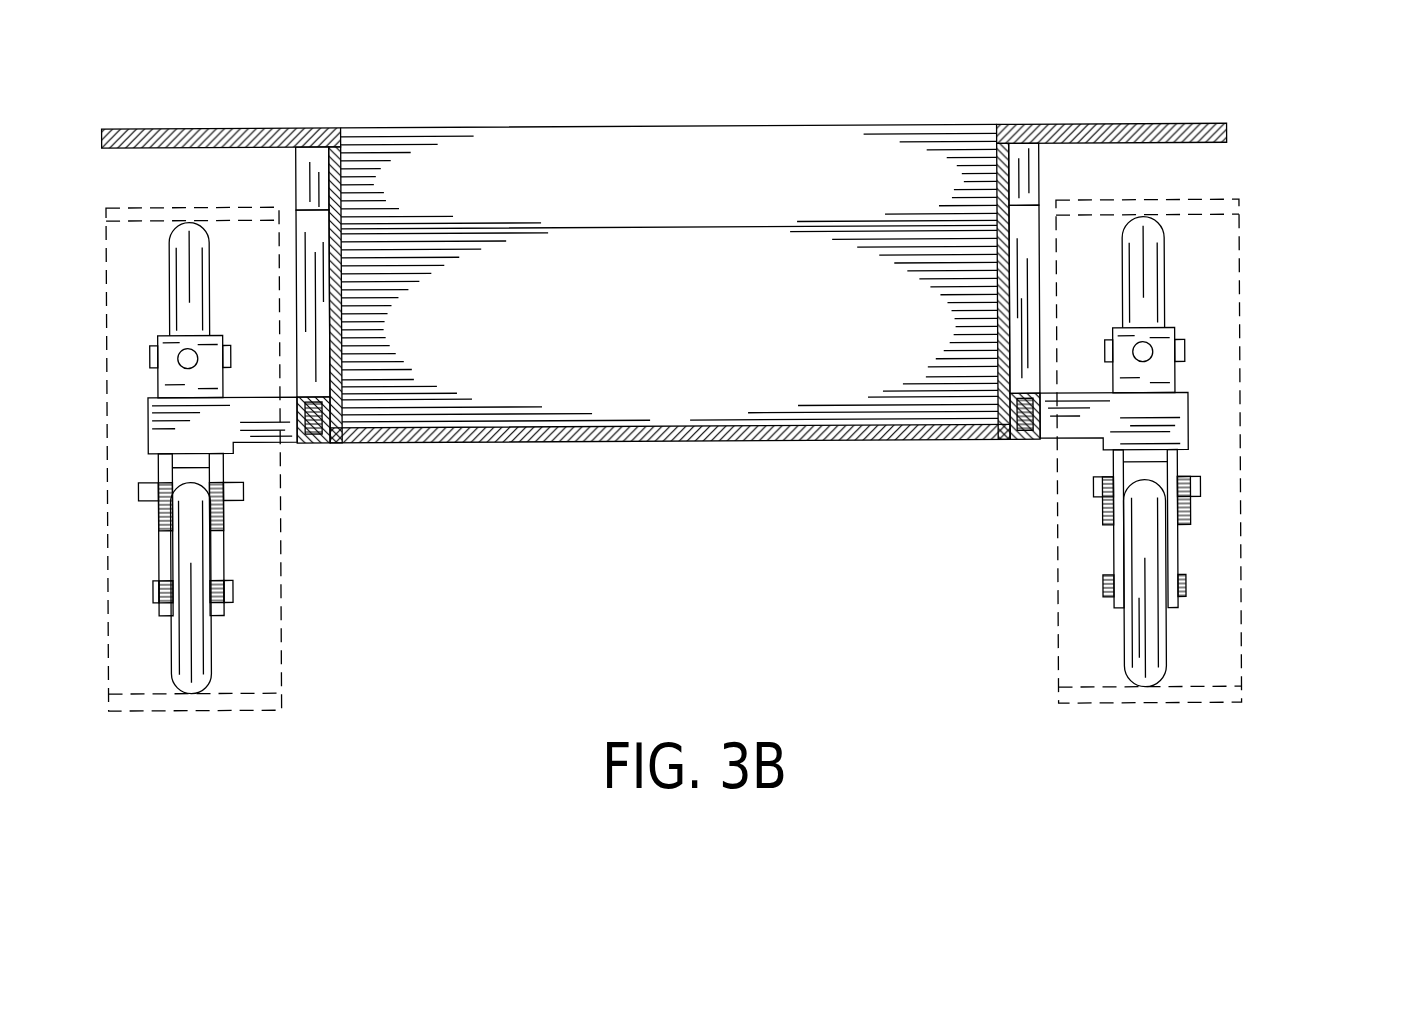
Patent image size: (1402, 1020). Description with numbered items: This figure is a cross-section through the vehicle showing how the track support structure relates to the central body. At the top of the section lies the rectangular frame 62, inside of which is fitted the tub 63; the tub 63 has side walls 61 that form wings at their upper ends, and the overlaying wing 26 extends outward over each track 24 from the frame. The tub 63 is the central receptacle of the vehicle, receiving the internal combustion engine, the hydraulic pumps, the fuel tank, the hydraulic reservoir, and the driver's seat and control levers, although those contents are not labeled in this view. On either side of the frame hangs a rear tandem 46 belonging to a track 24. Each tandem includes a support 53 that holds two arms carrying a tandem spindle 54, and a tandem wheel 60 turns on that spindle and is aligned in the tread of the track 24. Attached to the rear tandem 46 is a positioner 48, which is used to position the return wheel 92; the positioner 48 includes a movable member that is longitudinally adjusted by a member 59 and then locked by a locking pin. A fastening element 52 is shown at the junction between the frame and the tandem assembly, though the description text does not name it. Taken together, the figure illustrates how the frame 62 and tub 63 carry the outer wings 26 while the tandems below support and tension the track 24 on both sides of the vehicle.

The overlaying wing 26 is at (177, 126).
The tub 63 is at (645, 272).
The side wall 61 is at (1000, 237).
The rectangular frame 62 is at (1003, 147).
The track 24 is at (1220, 235).
The return wheel 92 is at (1145, 296).
The member 59 is at (1158, 342).
The positioner 48 is at (1162, 387).
The support 53 is at (1190, 442).
The tandem spindle 54 is at (1197, 481).
The rear tandem 46 is at (1166, 552).
The tandem wheel 60 is at (1143, 620).
The fastener nut 52 is at (1018, 432).